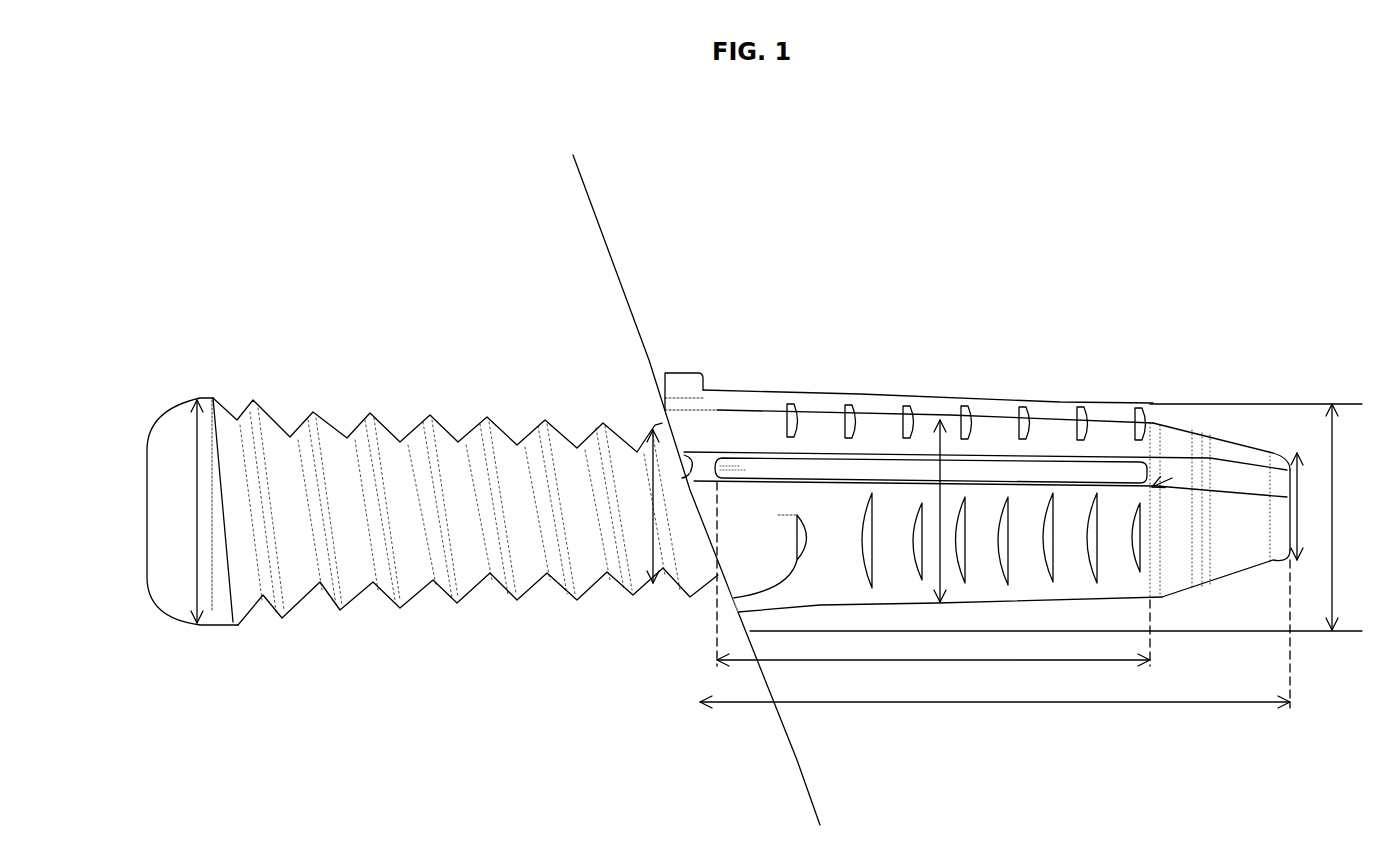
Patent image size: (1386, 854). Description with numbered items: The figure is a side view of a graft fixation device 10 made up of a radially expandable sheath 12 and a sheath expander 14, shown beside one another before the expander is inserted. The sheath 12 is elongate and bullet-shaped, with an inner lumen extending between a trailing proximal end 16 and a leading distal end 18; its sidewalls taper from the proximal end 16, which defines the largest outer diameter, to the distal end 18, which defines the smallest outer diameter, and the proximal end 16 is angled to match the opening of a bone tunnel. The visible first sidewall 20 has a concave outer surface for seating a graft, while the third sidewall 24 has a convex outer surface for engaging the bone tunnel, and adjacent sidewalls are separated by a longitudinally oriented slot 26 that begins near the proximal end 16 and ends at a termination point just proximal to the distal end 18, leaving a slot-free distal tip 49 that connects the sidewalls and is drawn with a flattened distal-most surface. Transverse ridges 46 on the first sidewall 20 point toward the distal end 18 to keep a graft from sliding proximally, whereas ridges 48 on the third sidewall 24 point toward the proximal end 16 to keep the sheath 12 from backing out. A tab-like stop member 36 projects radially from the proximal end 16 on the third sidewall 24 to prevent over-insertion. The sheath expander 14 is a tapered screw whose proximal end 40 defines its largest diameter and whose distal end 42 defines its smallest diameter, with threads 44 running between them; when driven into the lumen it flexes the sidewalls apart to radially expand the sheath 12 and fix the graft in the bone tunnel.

The graft fixation device 10 is at (1140, 166).
The radially expandable sheath 12 is at (992, 296).
The sheath expander 14 is at (413, 319).
The proximal end 16 is at (724, 587).
The distal end 18 is at (1224, 434).
The first sidewall 20 is at (1032, 570).
The third sidewall 24 is at (980, 437).
The longitudinally oriented slot 26 is at (845, 465).
The stop member 36 is at (677, 375).
The proximal end of screw 40 is at (152, 436).
The distal end of screw 42 is at (660, 427).
The threads 44 is at (430, 462).
The ridges on first and second sidewalls 46 is at (1097, 553).
The ridges on third sidewall 48 is at (1075, 418).
The distal tip 49 is at (1280, 452).